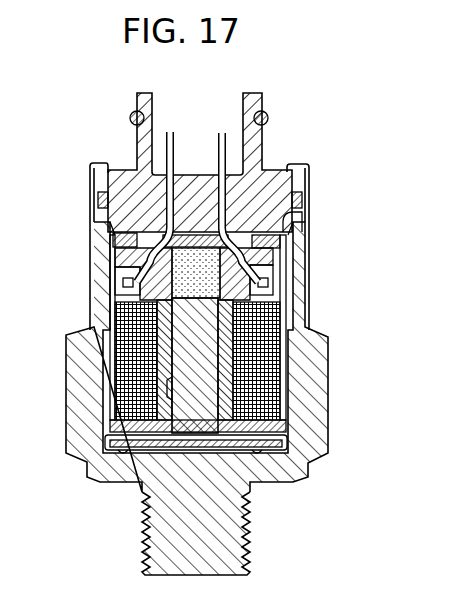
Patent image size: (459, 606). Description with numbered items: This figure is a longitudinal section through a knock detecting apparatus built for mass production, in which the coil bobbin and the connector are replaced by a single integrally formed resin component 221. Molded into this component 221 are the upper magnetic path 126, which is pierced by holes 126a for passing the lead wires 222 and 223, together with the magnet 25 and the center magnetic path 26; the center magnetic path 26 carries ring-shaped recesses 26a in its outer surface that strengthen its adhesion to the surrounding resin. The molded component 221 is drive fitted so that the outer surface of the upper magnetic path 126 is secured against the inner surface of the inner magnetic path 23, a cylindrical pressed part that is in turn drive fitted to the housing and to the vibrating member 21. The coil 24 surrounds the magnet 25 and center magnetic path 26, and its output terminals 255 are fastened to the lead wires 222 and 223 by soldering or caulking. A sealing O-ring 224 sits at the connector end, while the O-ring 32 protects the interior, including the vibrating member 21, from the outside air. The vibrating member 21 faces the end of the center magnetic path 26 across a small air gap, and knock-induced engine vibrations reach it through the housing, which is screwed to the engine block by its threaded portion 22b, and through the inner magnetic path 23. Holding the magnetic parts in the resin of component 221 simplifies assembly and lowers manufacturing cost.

The vibrating member 21 is at (309, 466).
The threaded portion 22b is at (244, 553).
The inner magnetic path 23 is at (285, 322).
The coil 24 is at (280, 373).
The magnet 25 is at (167, 258).
The center magnetic path 26 is at (178, 347).
The ring-shaped recesses 26a is at (170, 378).
The sealing O-ring 32 is at (100, 198).
The upper magnetic path 126 is at (305, 218).
The holes 126a is at (283, 240).
The integrally formed resin component 221 is at (287, 160).
The lead wire 222 is at (268, 115).
The lead wire 223 is at (170, 130).
The sealing O-ring 224 is at (130, 116).
The output terminals 255 is at (267, 287).